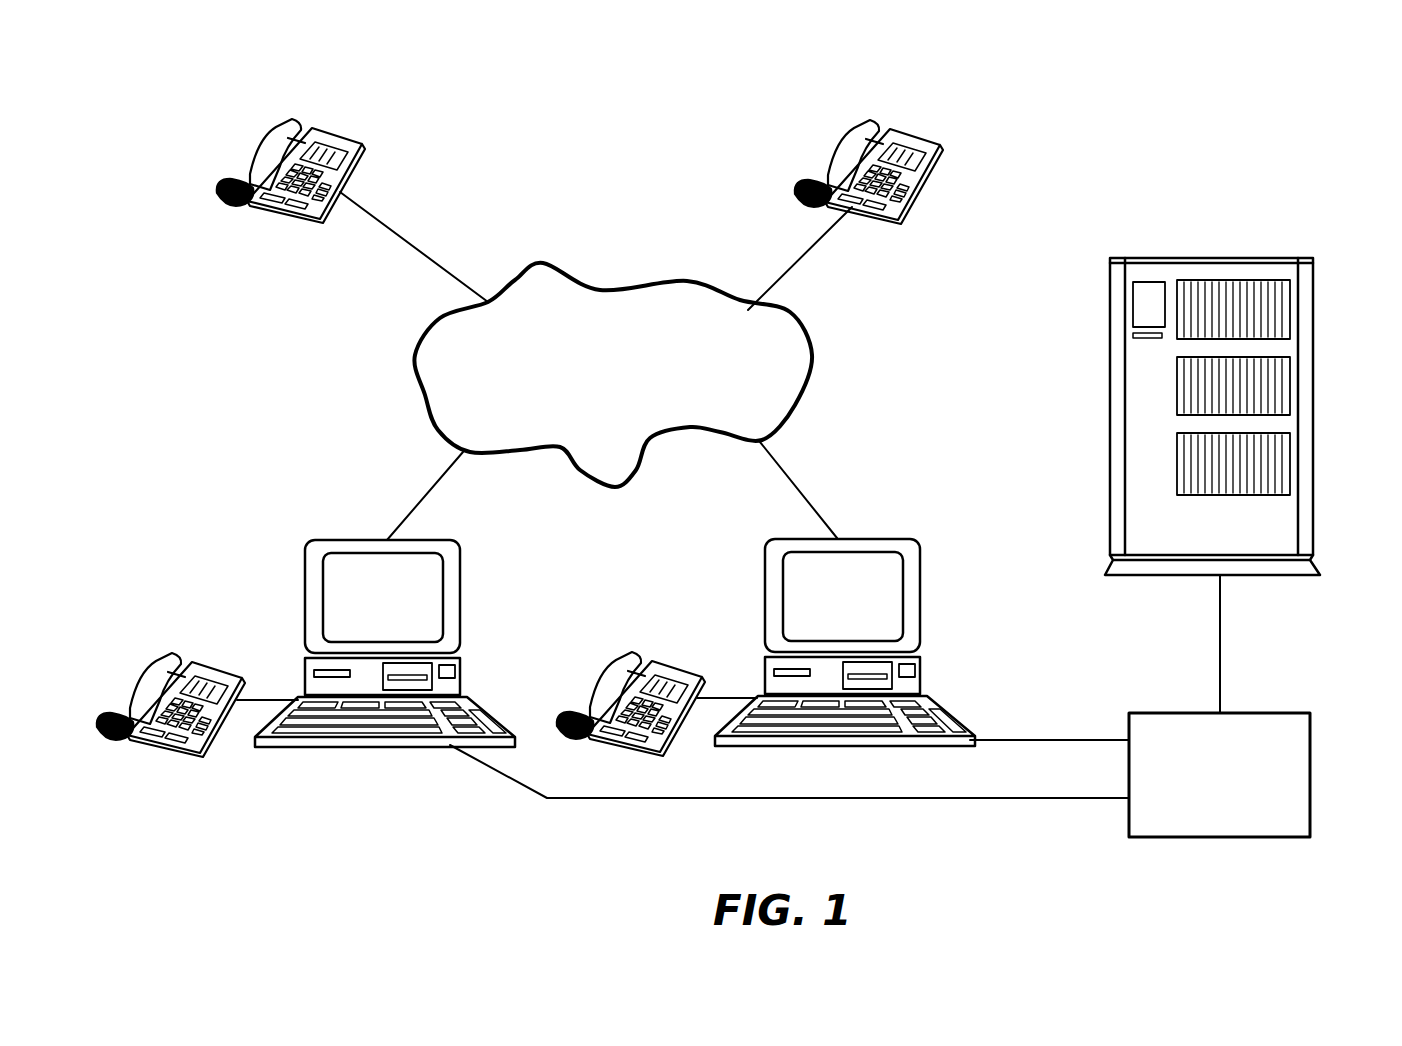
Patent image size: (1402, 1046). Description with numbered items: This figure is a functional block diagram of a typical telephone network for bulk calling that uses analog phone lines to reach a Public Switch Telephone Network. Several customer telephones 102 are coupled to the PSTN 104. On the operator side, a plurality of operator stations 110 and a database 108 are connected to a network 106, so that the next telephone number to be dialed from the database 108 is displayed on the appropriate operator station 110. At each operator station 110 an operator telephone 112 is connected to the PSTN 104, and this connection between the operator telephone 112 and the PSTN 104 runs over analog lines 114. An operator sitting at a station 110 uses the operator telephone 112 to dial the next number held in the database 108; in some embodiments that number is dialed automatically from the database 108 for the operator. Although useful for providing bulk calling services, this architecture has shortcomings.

The customer telephone 102 is at (357, 173).
The Public Switch Telephone Network (PSTN) 104 is at (581, 276).
The network 106 is at (1290, 713).
The database 108 is at (1282, 258).
The operator station 110 is at (460, 607).
The operator telephone 112 is at (158, 658).
The analog lines 114 is at (420, 502).